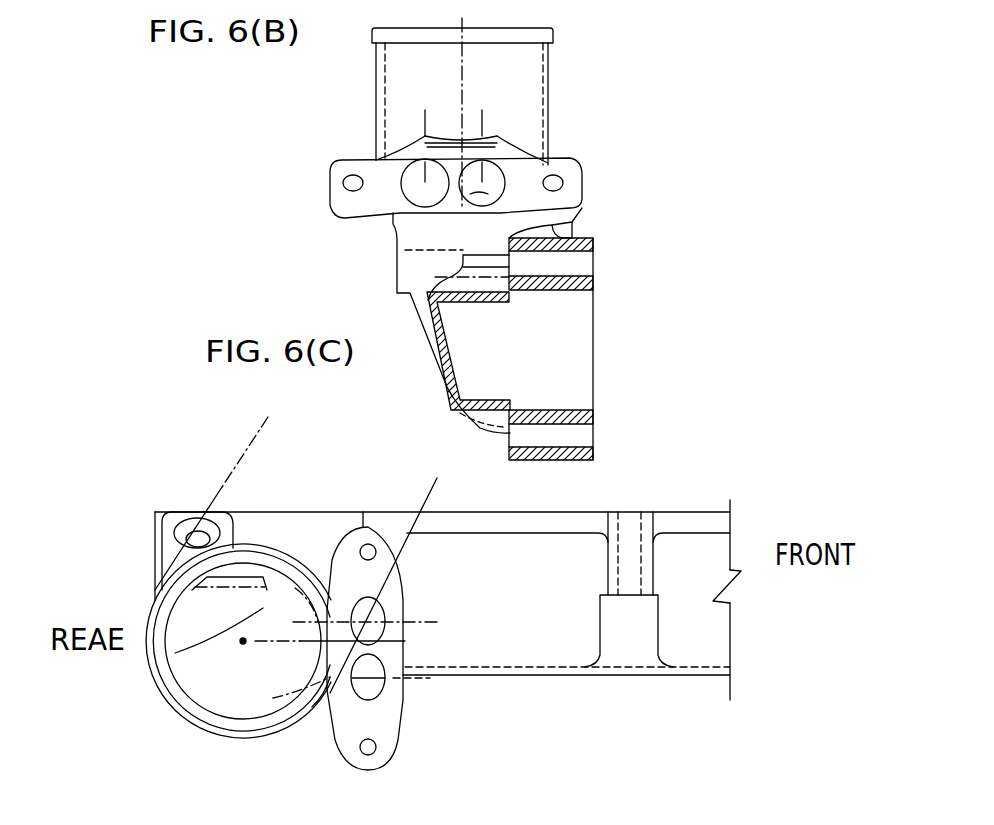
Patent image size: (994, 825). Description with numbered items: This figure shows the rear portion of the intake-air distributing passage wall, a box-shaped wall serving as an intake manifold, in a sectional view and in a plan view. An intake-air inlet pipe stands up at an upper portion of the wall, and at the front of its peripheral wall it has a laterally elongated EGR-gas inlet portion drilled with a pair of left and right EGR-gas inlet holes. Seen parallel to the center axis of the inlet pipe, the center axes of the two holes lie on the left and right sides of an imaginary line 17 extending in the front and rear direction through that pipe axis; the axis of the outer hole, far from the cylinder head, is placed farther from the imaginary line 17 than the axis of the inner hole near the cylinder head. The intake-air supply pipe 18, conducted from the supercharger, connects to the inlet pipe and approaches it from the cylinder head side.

The imaginary line 17 is at (381, 642).
The intake-air supply pipe 18 is at (252, 497).